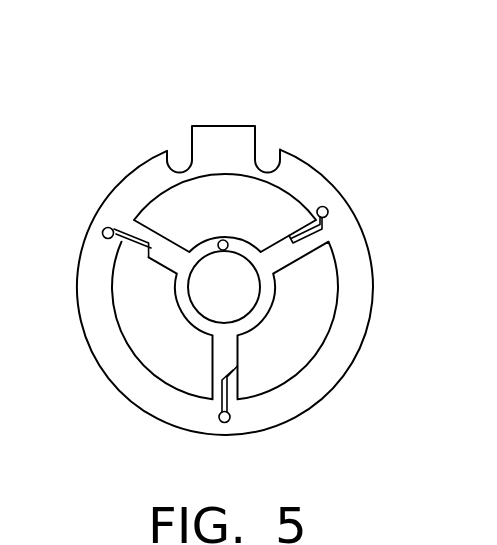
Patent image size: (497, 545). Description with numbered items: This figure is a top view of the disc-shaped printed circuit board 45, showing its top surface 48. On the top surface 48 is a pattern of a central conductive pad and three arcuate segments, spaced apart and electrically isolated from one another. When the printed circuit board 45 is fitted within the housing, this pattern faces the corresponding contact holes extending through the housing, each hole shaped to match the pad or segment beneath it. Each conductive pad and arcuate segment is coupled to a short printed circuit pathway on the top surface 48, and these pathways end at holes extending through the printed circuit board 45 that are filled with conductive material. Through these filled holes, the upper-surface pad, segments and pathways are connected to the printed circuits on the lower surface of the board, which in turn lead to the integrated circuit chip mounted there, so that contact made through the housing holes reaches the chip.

The printed circuit board 45 is at (184, 88).
The top surface 48 is at (240, 126).